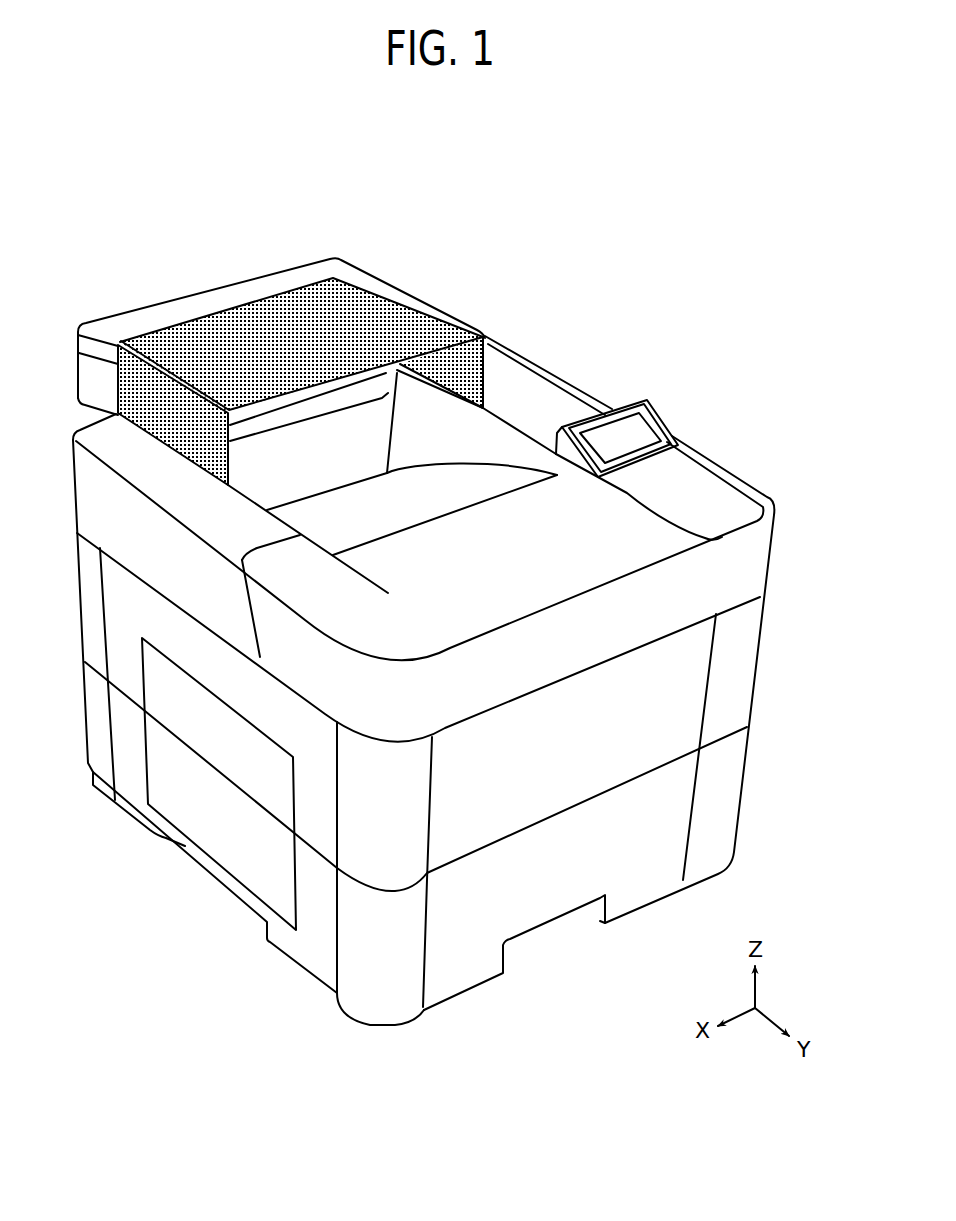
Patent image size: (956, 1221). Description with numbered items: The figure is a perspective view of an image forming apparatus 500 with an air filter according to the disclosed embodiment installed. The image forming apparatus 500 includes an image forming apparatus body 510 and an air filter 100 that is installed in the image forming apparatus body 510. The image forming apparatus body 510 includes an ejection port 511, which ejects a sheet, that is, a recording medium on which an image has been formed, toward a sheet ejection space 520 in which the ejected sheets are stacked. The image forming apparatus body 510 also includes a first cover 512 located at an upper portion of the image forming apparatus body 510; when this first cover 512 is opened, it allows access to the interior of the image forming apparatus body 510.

The air filter 100 is at (186, 265).
The image forming apparatus 500 is at (745, 222).
The image forming apparatus body 510 is at (681, 350).
The ejection port 511 is at (483, 336).
The first cover 512 is at (752, 564).
The sheet ejection space 520 is at (430, 432).